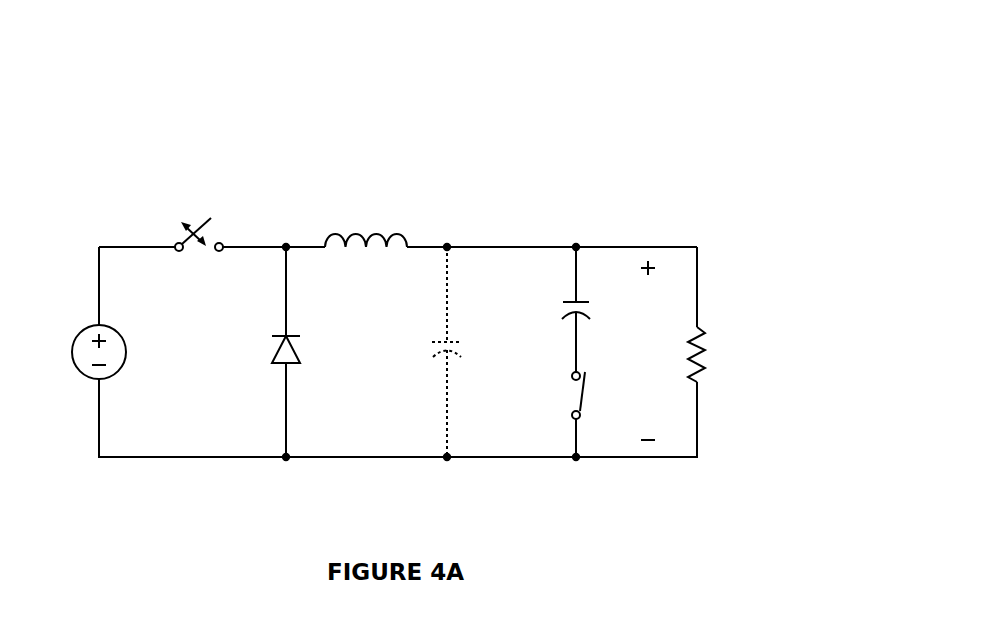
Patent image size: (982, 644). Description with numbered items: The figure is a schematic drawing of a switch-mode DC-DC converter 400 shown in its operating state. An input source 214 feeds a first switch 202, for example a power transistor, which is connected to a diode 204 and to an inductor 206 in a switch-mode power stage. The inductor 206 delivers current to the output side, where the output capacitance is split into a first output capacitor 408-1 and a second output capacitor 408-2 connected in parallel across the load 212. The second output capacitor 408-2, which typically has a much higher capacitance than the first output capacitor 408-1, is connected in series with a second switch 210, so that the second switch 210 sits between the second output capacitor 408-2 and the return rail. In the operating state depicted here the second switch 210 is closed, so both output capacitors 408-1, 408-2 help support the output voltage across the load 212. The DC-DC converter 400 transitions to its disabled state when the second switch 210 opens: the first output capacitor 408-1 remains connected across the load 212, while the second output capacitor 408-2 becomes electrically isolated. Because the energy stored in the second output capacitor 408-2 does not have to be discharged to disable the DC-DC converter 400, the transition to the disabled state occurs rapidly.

The DC-DC converter 400 is at (630, 93).
The first switch 202 is at (207, 205).
The diode 204 is at (267, 347).
The inductor 206 is at (366, 223).
The second switch 210 is at (552, 395).
The load 212 is at (712, 377).
The input voltage source 214 is at (80, 323).
The first output capacitor 408-1 is at (428, 343).
The second output capacitor 408-2 is at (557, 310).